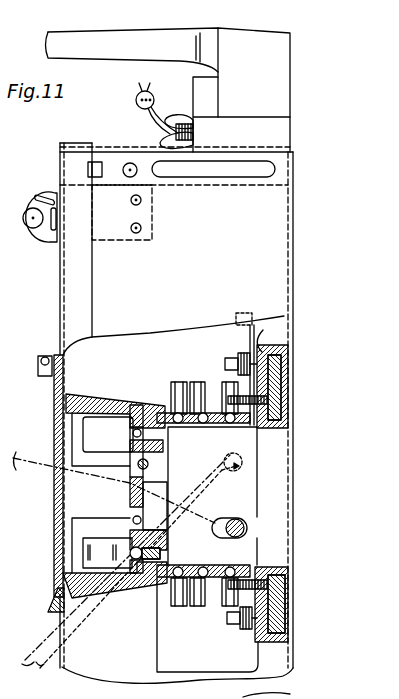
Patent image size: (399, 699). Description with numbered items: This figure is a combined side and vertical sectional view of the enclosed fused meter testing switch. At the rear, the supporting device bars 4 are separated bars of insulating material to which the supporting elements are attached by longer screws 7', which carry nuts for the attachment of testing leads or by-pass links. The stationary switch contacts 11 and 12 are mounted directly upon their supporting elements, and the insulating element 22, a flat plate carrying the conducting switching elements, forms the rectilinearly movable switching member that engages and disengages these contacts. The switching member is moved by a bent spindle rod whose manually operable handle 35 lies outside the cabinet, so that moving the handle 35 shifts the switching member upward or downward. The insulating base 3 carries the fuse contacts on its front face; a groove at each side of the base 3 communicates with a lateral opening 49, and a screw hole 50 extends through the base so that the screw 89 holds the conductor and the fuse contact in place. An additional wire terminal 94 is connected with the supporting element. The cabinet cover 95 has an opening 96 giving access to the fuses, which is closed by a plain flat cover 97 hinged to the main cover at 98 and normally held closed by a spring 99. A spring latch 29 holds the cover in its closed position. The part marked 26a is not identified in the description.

The wing nut clamp 26a is at (119, 152).
The spring latch 29 is at (42, 190).
The cover 95 is at (60, 292).
The hinge 98 is at (50, 358).
The spring 99 is at (58, 398).
The manually operable handle 35 is at (36, 460).
The screw hole 50 is at (130, 447).
The screw 89 is at (163, 468).
The lateral opening 49 is at (128, 500).
The plain flat cover 97 is at (55, 550).
The opening 96 is at (58, 587).
The wire terminal 94 is at (238, 333).
The supporting device bar 4 is at (278, 352).
The stationary switch contact 12 is at (182, 384).
The longer screw 7' is at (231, 498).
The stationary switch contact 11 is at (193, 608).
The insulating element 22 is at (163, 657).
The insulating base 3 is at (4, 514).